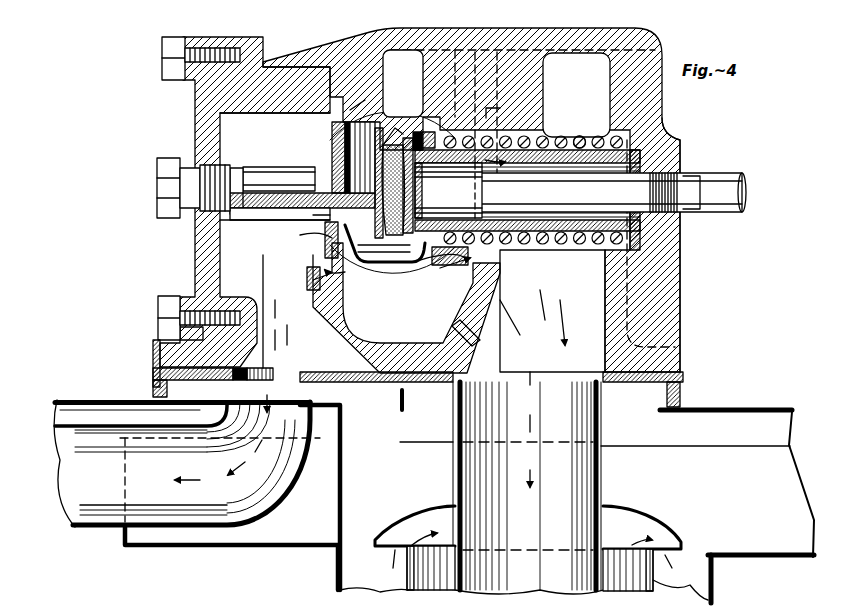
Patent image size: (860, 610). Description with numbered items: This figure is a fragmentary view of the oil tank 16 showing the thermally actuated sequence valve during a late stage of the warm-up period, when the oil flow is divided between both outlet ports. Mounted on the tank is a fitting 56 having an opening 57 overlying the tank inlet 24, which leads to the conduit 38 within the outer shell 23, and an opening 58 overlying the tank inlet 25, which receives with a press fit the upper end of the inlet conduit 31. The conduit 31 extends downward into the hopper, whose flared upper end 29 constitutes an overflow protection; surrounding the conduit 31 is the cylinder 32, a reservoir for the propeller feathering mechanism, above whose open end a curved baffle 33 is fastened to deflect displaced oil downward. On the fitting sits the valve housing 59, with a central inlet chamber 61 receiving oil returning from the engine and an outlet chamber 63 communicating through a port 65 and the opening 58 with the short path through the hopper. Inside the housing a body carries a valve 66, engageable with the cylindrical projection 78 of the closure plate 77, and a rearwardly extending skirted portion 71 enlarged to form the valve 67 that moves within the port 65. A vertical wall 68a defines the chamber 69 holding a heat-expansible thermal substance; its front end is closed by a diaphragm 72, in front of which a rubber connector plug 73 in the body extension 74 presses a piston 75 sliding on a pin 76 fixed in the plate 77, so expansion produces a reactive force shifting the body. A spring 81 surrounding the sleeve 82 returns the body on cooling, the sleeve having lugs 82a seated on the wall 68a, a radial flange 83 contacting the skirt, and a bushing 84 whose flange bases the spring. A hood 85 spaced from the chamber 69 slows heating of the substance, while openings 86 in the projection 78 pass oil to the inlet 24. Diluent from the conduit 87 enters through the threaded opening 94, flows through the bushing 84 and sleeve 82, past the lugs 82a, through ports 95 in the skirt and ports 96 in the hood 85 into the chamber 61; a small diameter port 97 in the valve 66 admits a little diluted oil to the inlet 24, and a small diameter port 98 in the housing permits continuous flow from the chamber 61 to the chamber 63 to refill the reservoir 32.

The oil tank 16 is at (751, 402).
The outer shell 23 is at (70, 398).
The tank inlet 24 is at (157, 386).
The tank inlet 25 is at (658, 407).
The flared upper end 29 is at (118, 548).
The inlet conduit 31 is at (603, 478).
The cylinder 32 is at (425, 573).
The curved baffle 33 is at (394, 512).
The conduit 38 is at (103, 509).
The fitting 56 is at (155, 370).
The opening 57 is at (270, 368).
The opening 58 is at (603, 372).
The housing 59 is at (685, 142).
The central inlet chamber 61 is at (383, 62).
The outlet chamber 63 is at (595, 104).
The port 65 is at (488, 117).
The valve 66 is at (345, 120).
The valve 67 is at (458, 115).
The vertical wall 68a is at (434, 190).
The chamber 69 is at (378, 126).
The skirted portion 71 is at (420, 108).
The diaphragm 72 is at (352, 268).
The connector plug 73 is at (312, 220).
The body extension 74 is at (272, 168).
The piston 75 is at (275, 178).
The pin 76 is at (225, 200).
The plate 77 is at (197, 104).
The cylindrical projection 78 is at (268, 58).
The spring 81 is at (580, 139).
The sleeve 82 is at (542, 140).
The lugs 82a is at (448, 190).
The radial flange 83 is at (432, 264).
The bushing 84 is at (552, 311).
The hood 85 is at (396, 266).
The openings 86 is at (215, 275).
The conduit 87 is at (735, 173).
The threaded opening 94 is at (690, 212).
The ports 95 is at (398, 125).
The ports 96 is at (370, 266).
The small diameter port 97 is at (290, 158).
The small diameter port 98 is at (472, 337).